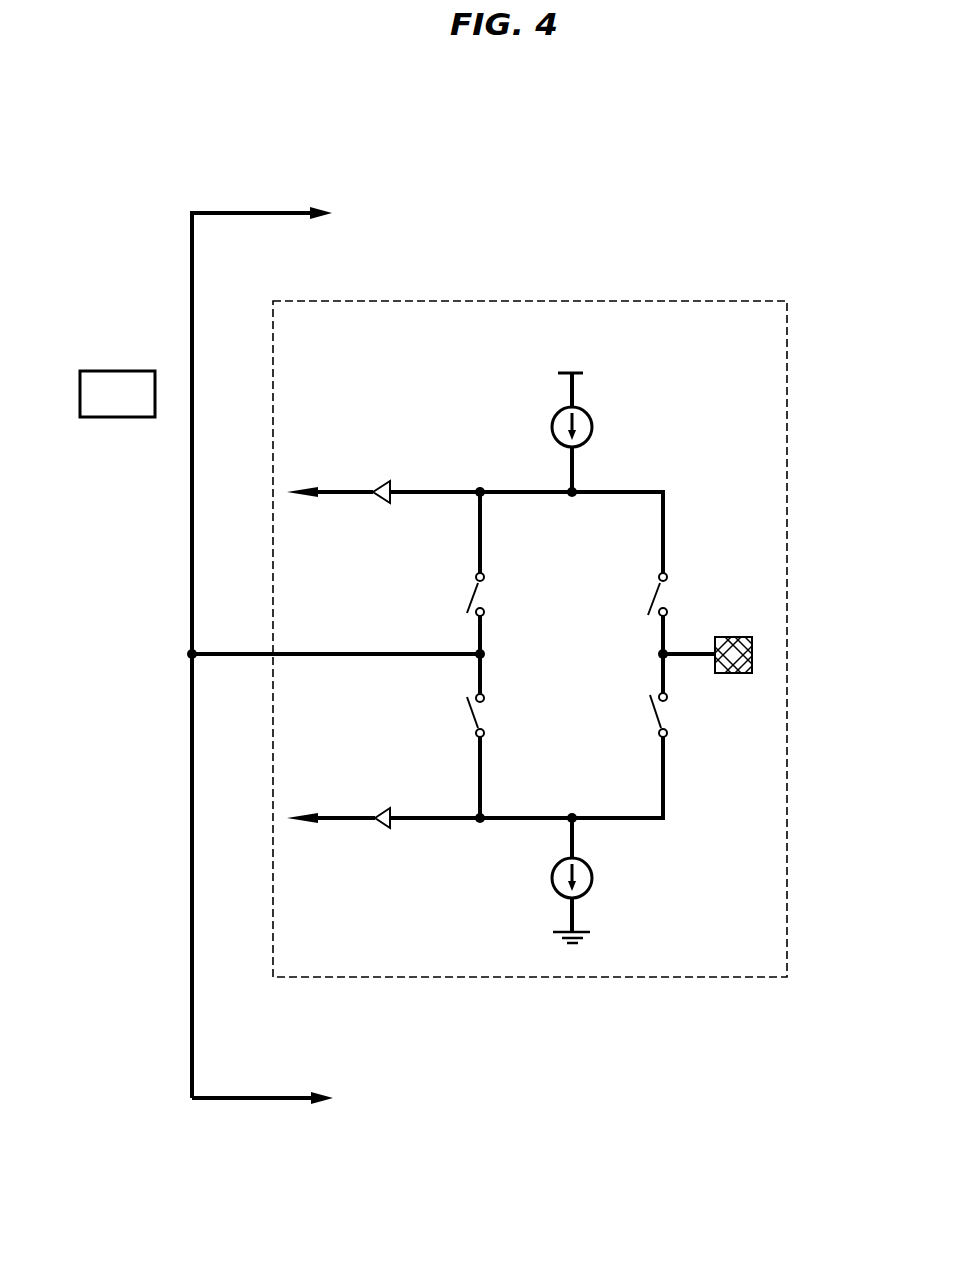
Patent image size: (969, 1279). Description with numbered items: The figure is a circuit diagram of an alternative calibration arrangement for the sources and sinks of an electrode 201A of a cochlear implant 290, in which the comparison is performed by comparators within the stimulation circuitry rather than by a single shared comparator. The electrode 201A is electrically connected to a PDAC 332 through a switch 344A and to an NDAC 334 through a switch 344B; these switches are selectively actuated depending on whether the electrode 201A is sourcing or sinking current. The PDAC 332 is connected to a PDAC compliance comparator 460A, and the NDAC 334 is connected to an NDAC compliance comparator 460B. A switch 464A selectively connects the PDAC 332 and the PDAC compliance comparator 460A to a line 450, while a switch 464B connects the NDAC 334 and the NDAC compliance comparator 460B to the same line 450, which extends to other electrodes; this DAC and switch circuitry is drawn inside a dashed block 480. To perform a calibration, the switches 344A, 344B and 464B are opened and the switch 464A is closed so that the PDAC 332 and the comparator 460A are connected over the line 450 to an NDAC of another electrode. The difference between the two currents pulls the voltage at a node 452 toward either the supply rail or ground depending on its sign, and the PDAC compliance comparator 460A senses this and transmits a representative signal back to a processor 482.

The cochlear implant 290 is at (144, 152).
The processor 482 is at (110, 370).
The line 450 is at (230, 652).
The DAC and switch circuit block 480 is at (488, 308).
The PDAC 332 is at (590, 428).
The NDAC 334 is at (552, 877).
The node 452 is at (328, 494).
The PDAC compliance comparator 460A is at (390, 496).
The NDAC compliance comparator 460B is at (390, 814).
The switch 464A is at (472, 597).
The switch 464B is at (472, 708).
The switch 344A is at (662, 593).
The switch 344B is at (656, 713).
The electrode 201A is at (752, 654).